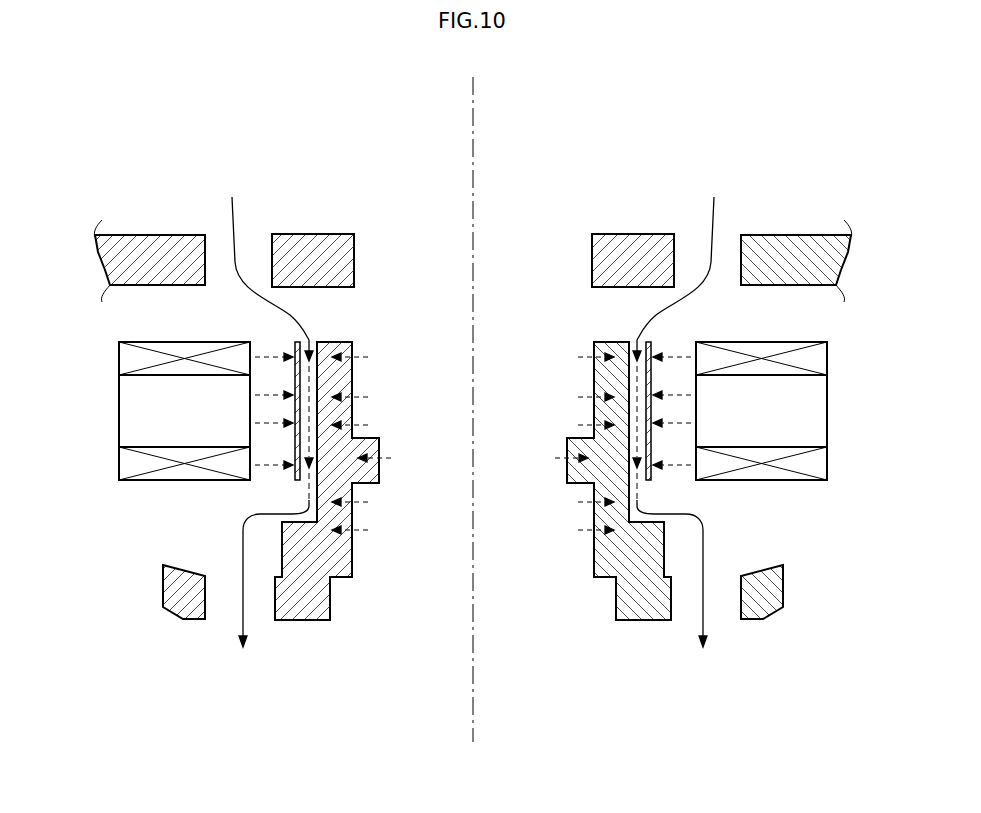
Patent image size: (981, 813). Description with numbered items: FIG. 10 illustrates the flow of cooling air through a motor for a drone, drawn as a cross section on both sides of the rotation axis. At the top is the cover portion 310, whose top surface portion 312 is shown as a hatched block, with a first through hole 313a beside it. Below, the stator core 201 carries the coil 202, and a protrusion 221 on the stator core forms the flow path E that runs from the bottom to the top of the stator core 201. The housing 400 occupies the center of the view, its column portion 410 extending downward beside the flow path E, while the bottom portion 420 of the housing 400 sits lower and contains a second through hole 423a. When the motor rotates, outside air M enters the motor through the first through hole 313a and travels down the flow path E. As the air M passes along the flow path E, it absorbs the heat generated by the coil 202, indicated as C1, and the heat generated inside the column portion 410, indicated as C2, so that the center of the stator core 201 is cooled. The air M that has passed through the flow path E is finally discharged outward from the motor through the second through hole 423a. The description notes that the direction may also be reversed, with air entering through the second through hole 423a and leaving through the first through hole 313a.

The stator core 201 is at (128, 393).
The coil 202 is at (120, 350).
The protrusion 221 is at (285, 482).
The cover portion 310 is at (332, 234).
The top surface portion 312 is at (473, 233).
The first through hole 313a is at (272, 248).
The housing 400 is at (337, 650).
The column portion 410 is at (346, 342).
The bottom portion 420 is at (165, 590).
The second through hole 423a is at (206, 619).
The heat generated by the coil C1 is at (258, 424).
The heat generated inside the column portion C2 is at (363, 358).
The flow path E is at (308, 370).
The outside air M is at (232, 197).